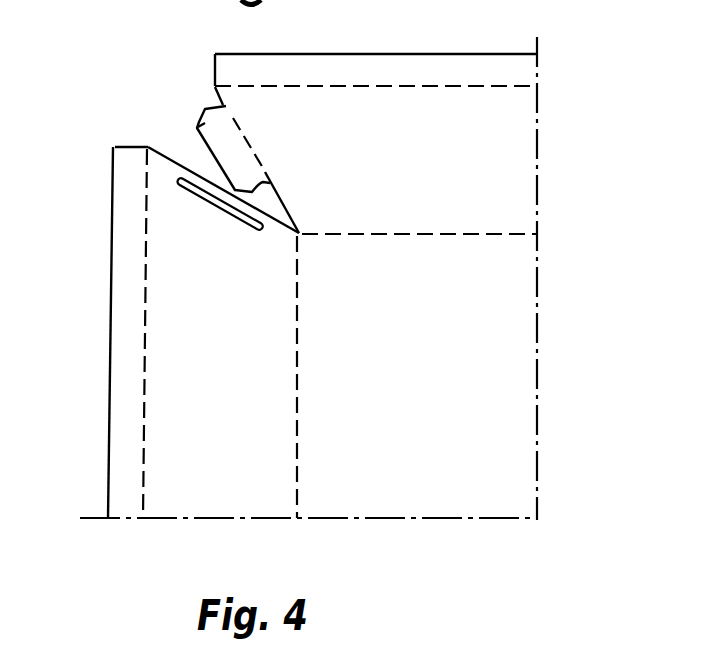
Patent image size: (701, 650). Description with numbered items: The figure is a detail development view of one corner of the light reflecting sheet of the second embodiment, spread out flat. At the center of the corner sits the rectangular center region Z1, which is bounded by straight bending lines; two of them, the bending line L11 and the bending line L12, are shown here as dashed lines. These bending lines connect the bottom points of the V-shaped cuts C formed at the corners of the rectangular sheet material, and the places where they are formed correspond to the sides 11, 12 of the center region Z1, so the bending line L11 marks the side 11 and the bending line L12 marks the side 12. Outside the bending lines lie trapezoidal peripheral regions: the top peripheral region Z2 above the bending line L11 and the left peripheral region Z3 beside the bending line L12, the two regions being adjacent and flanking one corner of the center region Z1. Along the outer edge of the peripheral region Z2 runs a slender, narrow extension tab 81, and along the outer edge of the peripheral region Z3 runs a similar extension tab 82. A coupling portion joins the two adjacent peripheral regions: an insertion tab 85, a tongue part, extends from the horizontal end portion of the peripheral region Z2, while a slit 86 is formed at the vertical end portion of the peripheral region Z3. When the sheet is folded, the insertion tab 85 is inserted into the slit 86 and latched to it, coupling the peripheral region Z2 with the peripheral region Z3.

The extension tab 81 is at (375, 63).
The extension tab 82 is at (118, 381).
The insertion tab 85 is at (205, 108).
The slit 86 is at (217, 205).
The V-shaped cut C is at (167, 157).
The bending line L11 is at (419, 273).
The side of the center region 11 is at (397, 235).
The bending line L12 is at (380, 377).
The side of the center region 12 is at (297, 420).
The center region Z1 is at (503, 450).
The peripheral region Z2 is at (440, 167).
The peripheral region Z3 is at (233, 408).